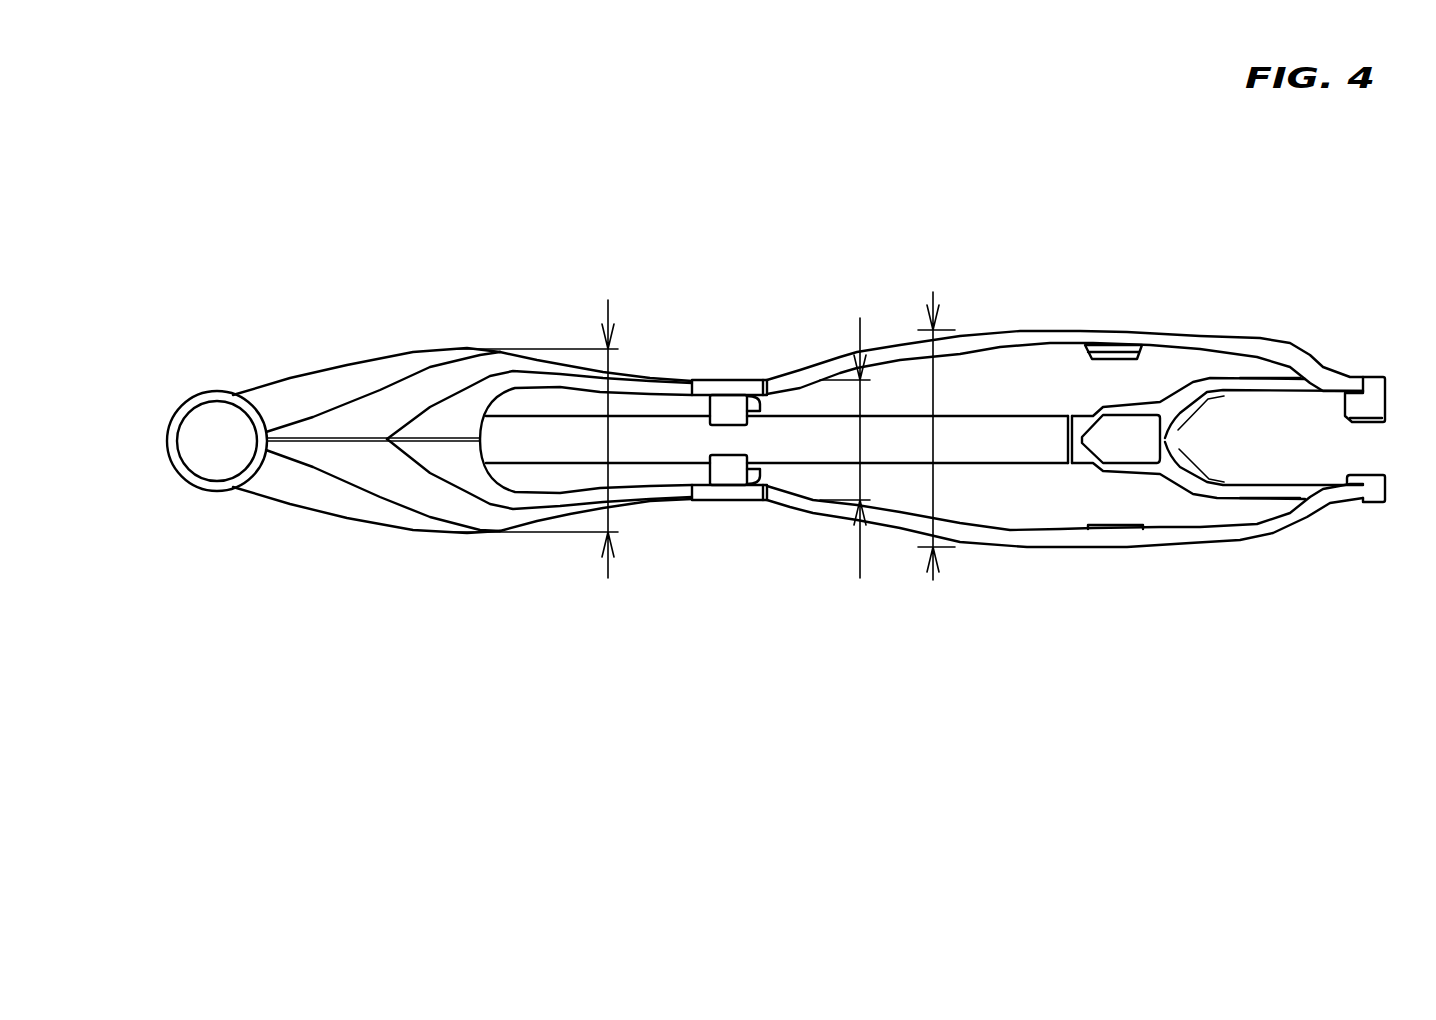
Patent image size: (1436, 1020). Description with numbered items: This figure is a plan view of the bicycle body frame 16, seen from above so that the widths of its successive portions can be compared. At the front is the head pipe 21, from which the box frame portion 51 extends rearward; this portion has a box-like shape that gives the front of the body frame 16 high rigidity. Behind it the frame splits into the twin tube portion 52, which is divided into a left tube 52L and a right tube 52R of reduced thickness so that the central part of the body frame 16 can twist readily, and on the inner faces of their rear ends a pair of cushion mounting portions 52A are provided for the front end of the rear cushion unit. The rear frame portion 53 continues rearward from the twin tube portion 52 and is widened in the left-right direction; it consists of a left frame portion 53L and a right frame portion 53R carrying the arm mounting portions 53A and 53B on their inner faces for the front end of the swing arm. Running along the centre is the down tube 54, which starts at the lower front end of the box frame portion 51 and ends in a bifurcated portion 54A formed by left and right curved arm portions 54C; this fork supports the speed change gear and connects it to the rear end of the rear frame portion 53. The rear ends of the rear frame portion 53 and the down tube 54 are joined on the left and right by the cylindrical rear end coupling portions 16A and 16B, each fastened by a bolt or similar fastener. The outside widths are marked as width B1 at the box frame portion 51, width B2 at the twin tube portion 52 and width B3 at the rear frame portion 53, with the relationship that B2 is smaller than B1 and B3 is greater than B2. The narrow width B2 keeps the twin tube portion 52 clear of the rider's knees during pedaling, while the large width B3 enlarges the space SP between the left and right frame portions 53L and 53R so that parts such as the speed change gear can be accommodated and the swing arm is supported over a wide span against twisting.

The body frame 16 is at (372, 205).
The head pipe 21 is at (182, 407).
The box frame portion 51 is at (363, 527).
The twin tube portion 52 is at (672, 500).
The right tube 52R is at (537, 355).
The left tube 52L is at (560, 517).
The cushion mounting portion 52A is at (762, 384).
The rear frame portion 53 is at (1107, 545).
The right frame portion 53R is at (1050, 330).
The left frame portion 53L is at (1038, 543).
The arm mounting portion 53B is at (1123, 357).
The arm mounting portion 53A is at (1127, 527).
The down tube 54 is at (983, 463).
The bifurcated portion 54A is at (1237, 498).
The curved arm portion 54C is at (1262, 375).
The rear end coupling portion 16A is at (1370, 502).
The rear end coupling portion 16B is at (1375, 375).
The space SP is at (1178, 370).
The width of the box frame portion B1 is at (540, 420).
The width of the twin tube portion B2 is at (848, 431).
The width of the rear frame portion B3 is at (934, 416).